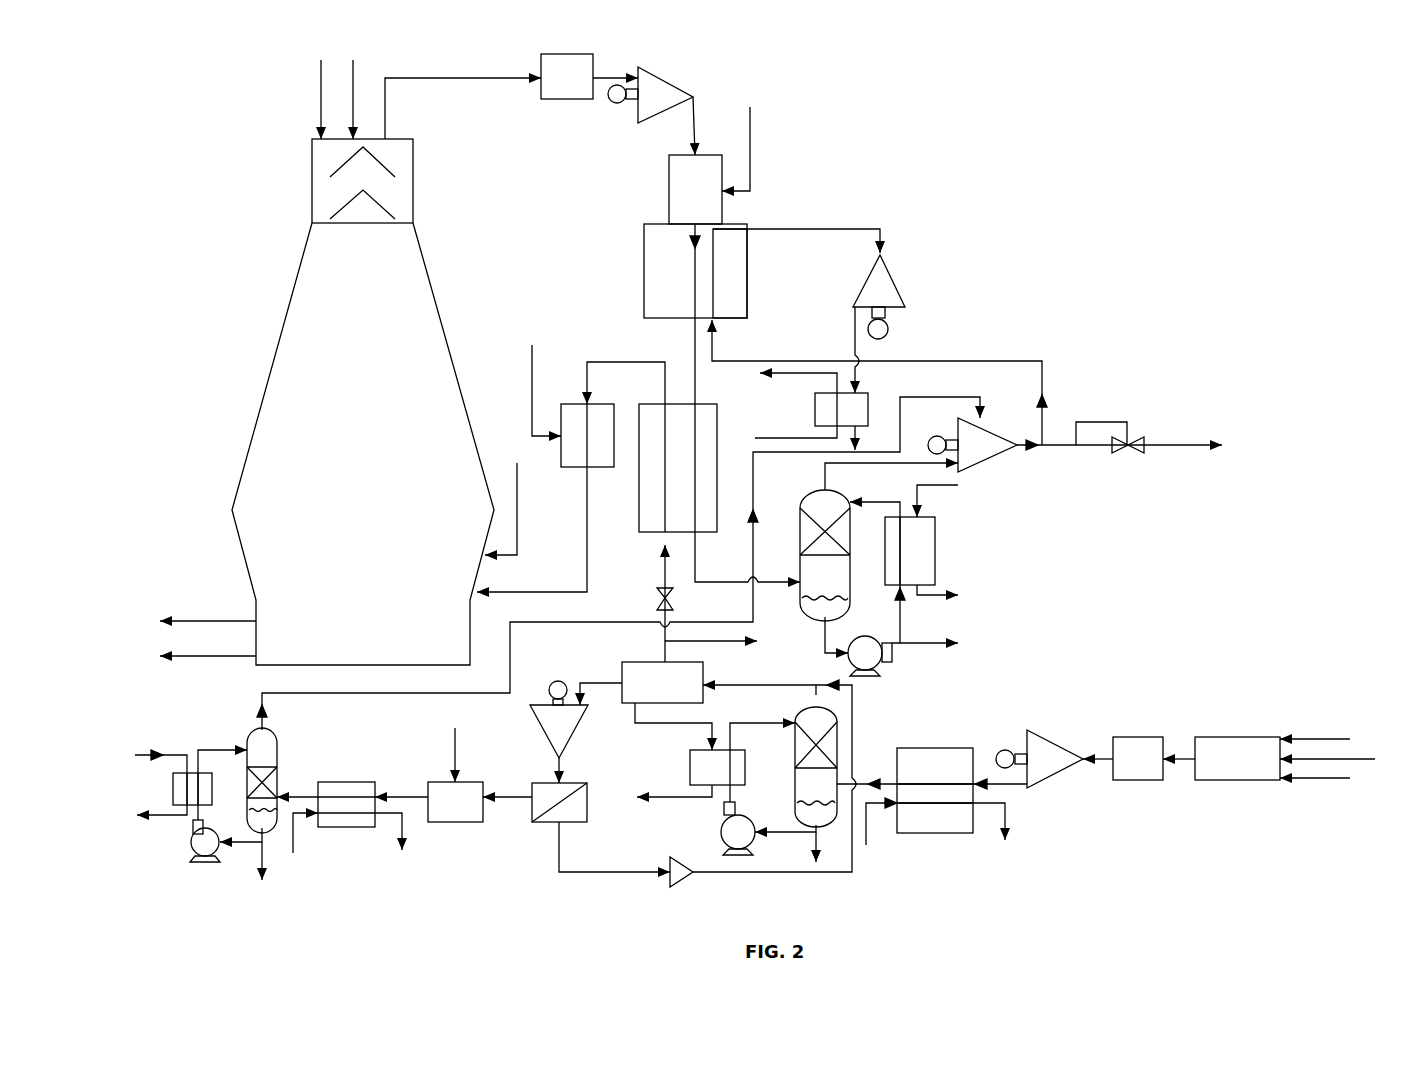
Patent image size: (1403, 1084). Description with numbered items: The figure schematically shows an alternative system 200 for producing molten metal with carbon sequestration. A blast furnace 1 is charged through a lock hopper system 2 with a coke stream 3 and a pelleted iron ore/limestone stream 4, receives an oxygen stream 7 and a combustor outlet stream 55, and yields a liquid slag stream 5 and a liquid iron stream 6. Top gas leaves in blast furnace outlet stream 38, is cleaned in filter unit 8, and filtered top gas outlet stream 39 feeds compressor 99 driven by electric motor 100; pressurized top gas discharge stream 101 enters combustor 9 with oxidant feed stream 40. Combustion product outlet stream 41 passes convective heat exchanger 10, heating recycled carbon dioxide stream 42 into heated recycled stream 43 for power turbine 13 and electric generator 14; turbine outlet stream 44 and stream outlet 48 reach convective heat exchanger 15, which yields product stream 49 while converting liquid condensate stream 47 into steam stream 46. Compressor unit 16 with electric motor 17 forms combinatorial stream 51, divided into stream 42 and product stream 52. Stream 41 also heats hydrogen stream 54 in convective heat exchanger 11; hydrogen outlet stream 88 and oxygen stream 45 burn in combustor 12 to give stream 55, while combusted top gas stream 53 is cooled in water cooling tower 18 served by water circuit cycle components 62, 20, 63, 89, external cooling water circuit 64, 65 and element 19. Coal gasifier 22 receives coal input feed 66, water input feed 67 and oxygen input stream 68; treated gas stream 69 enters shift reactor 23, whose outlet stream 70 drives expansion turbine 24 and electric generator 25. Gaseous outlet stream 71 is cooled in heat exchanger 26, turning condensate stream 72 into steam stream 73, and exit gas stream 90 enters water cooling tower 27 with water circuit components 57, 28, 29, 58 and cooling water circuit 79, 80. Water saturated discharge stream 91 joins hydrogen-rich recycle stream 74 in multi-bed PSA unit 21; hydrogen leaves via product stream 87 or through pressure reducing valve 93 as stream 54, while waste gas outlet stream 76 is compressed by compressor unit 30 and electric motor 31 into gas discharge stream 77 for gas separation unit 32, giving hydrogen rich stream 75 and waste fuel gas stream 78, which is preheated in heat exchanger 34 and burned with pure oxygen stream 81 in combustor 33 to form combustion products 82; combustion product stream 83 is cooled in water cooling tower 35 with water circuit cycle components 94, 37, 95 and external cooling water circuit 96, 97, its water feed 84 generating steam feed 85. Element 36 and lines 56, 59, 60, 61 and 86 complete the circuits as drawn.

The ironmaking system 200 is at (205, 142).
The blast furnace 1 is at (363, 444).
The lock hopper system 2 is at (362, 181).
The coke stream 3 is at (321, 95).
The pelleted iron ore/limestone stream 4 is at (353, 95).
The liquid slag stream 5 is at (248, 621).
The liquid iron stream 6 is at (248, 656).
The oxygen stream 7 is at (517, 525).
The filter unit 8 is at (567, 76).
The combustor 9 is at (695, 189).
The convective heat exchanger 10 is at (695, 271).
The convective heat exchanger 11 is at (678, 468).
The combustor 12 is at (587, 435).
The power turbine 13 is at (879, 281).
The electric generator 14 is at (888, 331).
The convective heat exchanger 15 is at (868, 410).
The carbon dioxide multi-stage intercooled compressor unit 16 is at (987, 445).
The electric motor 17 is at (934, 436).
The water cooling tower 18 is at (825, 555).
The heat exchanger 19 is at (935, 548).
The water circuit cycle component 20 is at (882, 668).
The multi-bed PSA unit 21 is at (662, 682).
The coal gasifier 22 is at (1237, 758).
The sour gas catalytic CO shift reactor 23 is at (1138, 758).
The expansion turbine 24 is at (1055, 759).
The electric generator 25 is at (1006, 748).
The heat exchanger 26 is at (935, 790).
The water cooling tower 27 is at (816, 767).
The water circuit component 28 is at (724, 852).
The water circuit component 29 is at (745, 778).
The compressor unit 30 is at (559, 731).
The electric motor 31 is at (557, 680).
The gas separation unit 32 is at (572, 802).
The combustor 33 is at (455, 802).
The heat exchanger 34 is at (348, 827).
The water cooling tower 35 is at (262, 780).
The heat exchanger 36 is at (173, 786).
The water circuit cycle component 37 is at (198, 858).
The blast furnace outlet stream 38 is at (520, 78).
The filtered top gas outlet stream 39 is at (604, 84).
The oxidant feed stream 40 is at (750, 160).
The combustion product outlet stream 41 is at (695, 362).
The recycled carbon dioxide stream 42 is at (714, 350).
The heated recycled carbon dioxide stream 43 is at (790, 229).
The turbine outlet stream 44 is at (855, 330).
The oxygen stream 45 is at (532, 398).
The steam stream 46 is at (800, 373).
The liquid condensate stream 47 is at (775, 438).
The carbon dioxide stream outlet 48 is at (860, 447).
The carbon dioxide product stream 49 is at (872, 463).
The combinatorial carbon dioxide stream 51 is at (1020, 450).
The carbon dioxide product stream 52 is at (1155, 447).
The combusted top gas stream 53 is at (700, 572).
The hydrogen stream 54 is at (663, 568).
The combustor outlet stream 55 is at (587, 520).
The gas line 56 is at (390, 693).
The water circuit component 57 is at (768, 832).
The water circuit component 58 is at (765, 723).
The gas line 59 is at (735, 683).
The solvent outlet 60 is at (814, 855).
The solvent line 61 is at (930, 645).
The water circuit cycle component 62 is at (820, 637).
The water circuit cycle component 63 is at (905, 641).
The external cooling water circuit 64 is at (935, 485).
The external cooling water circuit 65 is at (935, 592).
The coal input feed 66 is at (1326, 739).
The water input feed 67 is at (1364, 759).
The oxygen input stream 68 is at (1322, 778).
The treated gas output stream 69 is at (1195, 755).
The treated gaseous outlet stream 70 is at (1113, 755).
The gaseous outlet stream 71 is at (1027, 790).
The condensate stream 72 is at (866, 825).
The steam stream 73 is at (1003, 835).
The hydrogen-rich recycle stream 74 is at (790, 872).
The hydrogen rich stream 75 is at (565, 872).
The waste gas outlet stream 76 is at (580, 675).
The gas discharge stream 77 is at (565, 768).
The non-diffusing waste fuel gas stream 78 is at (506, 797).
The cooling water circuit 79 is at (645, 723).
The cooling water circuit 80 is at (670, 797).
The pure oxygen stream 81 is at (455, 740).
The combustion products 82 is at (410, 797).
The combustion product stream 83 is at (300, 797).
The water feed 84 is at (294, 848).
The steam feed 85 is at (410, 838).
The liquid outlet 86 is at (264, 862).
The hydrogen product stream 87 is at (730, 641).
The hydrogen outlet stream 88 is at (625, 362).
The water circuit cycle component 89 is at (874, 500).
The exit gas stream 90 is at (870, 782).
The water saturated discharge stream 91 is at (665, 650).
The pressure reducing valve 93 is at (675, 604).
The water circuit cycle component 94 is at (216, 832).
The water circuit cycle component 95 is at (213, 750).
The external cooling water circuit 96 is at (149, 755).
The external cooling water circuit 97 is at (160, 815).
The compressor 99 is at (665, 95).
The electric motor 100 is at (621, 104).
The pressurized top gas discharge stream 101 is at (695, 118).